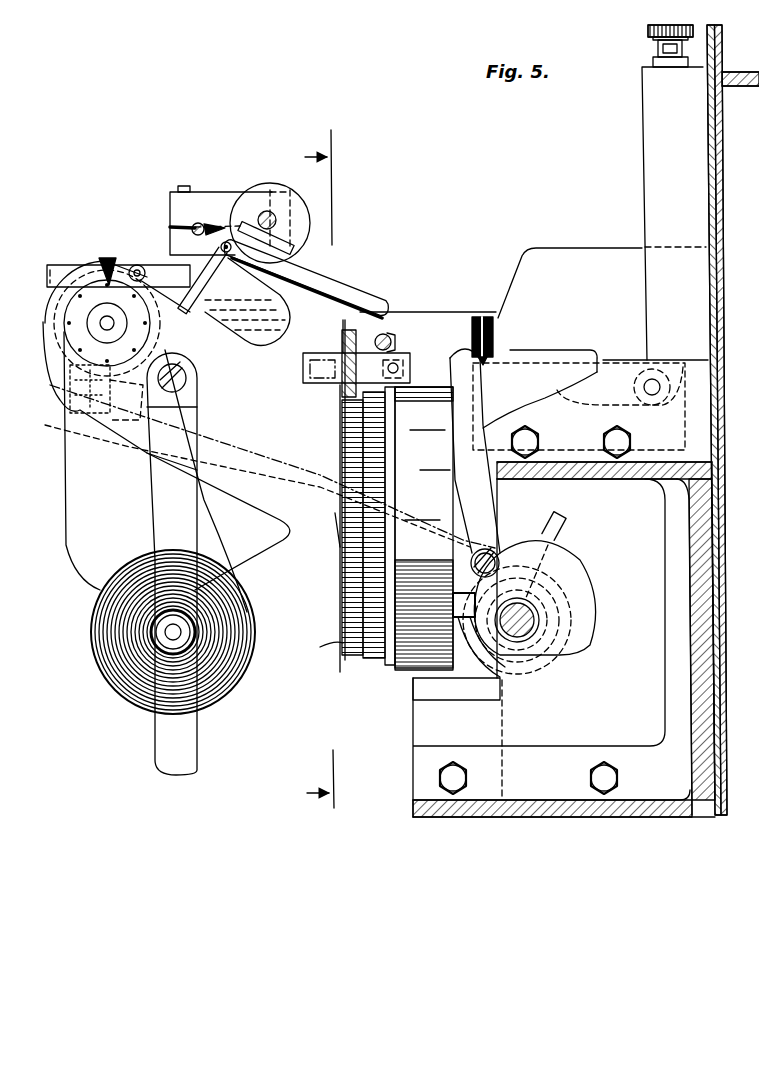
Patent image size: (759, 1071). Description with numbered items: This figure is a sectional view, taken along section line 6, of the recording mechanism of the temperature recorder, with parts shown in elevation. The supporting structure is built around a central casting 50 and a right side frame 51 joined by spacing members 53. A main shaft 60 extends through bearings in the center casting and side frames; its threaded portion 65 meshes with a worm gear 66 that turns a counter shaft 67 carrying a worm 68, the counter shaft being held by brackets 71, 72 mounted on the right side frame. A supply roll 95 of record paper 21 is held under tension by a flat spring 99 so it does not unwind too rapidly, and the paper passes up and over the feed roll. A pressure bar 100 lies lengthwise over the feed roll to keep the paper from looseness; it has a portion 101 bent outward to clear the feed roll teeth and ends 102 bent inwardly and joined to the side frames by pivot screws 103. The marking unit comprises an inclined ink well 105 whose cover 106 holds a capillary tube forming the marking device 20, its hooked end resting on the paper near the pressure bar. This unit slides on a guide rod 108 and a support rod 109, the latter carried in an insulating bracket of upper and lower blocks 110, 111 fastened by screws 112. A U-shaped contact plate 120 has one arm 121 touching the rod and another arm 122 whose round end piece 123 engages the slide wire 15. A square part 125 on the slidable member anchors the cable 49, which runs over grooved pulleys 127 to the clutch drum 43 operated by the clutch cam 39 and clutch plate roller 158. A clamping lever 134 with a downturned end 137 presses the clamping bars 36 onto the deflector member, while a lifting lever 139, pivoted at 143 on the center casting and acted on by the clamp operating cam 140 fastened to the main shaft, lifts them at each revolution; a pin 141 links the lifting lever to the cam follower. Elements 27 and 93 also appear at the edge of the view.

The section line 6- 6 is at (329, 469).
The slide wire 15 is at (278, 218).
The marking device 20 is at (104, 258).
The record strip 21 is at (63, 450).
The casing 27 is at (98, 396).
The clamping bars 36 is at (488, 398).
The cam 39 is at (472, 680).
The clutch drum 43 is at (340, 640).
The cable 49 is at (342, 398).
The central casting 50 is at (564, 639).
The right side frame 51 is at (9, 715).
The spacing members 53 is at (560, 782).
The main shaft 60 is at (520, 640).
The threaded portion 65 is at (540, 635).
The worm gear 66 is at (560, 540).
The counter shaft 67 is at (258, 452).
The worm 68 is at (80, 415).
The bracket 71 is at (483, 548).
The bracket 72 is at (108, 420).
The member 93 is at (8, 275).
The supply roll 95 is at (133, 705).
The flat spring 99 is at (180, 758).
The pressure bar 100 is at (120, 265).
The outward bent portion 101 is at (60, 265).
The inwardly bent ends 102 is at (138, 262).
The pivot screws 103 is at (153, 285).
The ink well 105 is at (258, 342).
The cover 106 is at (187, 315).
The guide rod 108 is at (393, 340).
The support rod 109 is at (200, 239).
The upper block 110 is at (218, 186).
The lower block 111 is at (225, 200).
The screws 112 is at (176, 190).
The contact plate 120 is at (392, 300).
The arm 121 is at (215, 220).
The arm 122 is at (328, 278).
The round end piece 123 is at (285, 227).
The square part 125 is at (343, 334).
The grooved pulleys 127 is at (325, 385).
The clamping lever 134 is at (488, 307).
The downturned outer end portion 137 is at (498, 500).
The lifting lever 139 is at (500, 360).
The clamp operating cam 140 is at (578, 595).
The pin 141 is at (490, 530).
The pivot 143 is at (652, 385).
The roller 158 is at (480, 665).